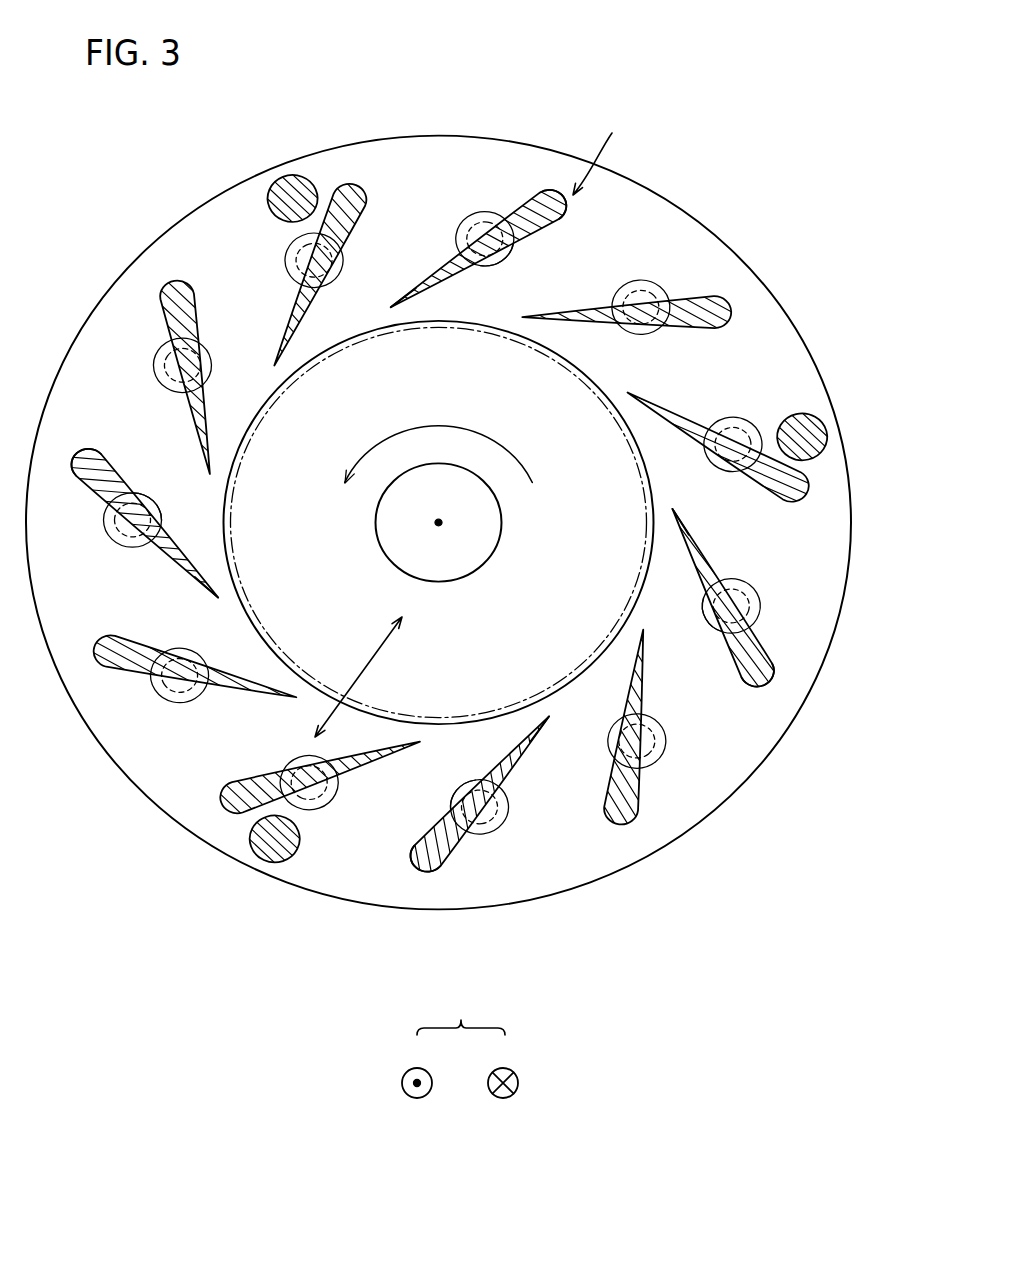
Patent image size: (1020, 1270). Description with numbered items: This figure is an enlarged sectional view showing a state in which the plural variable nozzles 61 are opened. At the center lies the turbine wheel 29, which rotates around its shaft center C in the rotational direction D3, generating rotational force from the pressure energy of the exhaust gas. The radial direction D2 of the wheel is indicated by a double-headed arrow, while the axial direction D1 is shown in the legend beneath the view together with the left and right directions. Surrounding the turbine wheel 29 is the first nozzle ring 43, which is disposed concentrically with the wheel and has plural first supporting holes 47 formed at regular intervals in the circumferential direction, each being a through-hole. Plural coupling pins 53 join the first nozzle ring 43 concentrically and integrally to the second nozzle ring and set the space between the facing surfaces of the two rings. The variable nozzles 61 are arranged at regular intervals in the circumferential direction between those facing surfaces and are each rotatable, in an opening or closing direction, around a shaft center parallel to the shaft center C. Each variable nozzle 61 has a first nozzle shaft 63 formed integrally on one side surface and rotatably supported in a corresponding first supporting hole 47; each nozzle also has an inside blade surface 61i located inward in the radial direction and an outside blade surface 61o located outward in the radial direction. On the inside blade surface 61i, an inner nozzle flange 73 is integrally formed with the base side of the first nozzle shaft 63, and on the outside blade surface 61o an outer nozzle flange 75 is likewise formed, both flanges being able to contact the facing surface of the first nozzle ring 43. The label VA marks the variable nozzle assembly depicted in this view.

The turbine wheel 29 is at (362, 334).
The first nozzle ring 43 is at (345, 141).
The first supporting hole 47 is at (509, 241).
The coupling pin 53 is at (284, 176).
The variable nozzle 61 is at (438, 242).
The inside blade surface 61i is at (430, 288).
The outside blade surface 61o is at (528, 214).
The first nozzle shaft 63 is at (497, 255).
The inner nozzle flange 73 is at (481, 322).
The outer nozzle flange 75 is at (476, 213).
The shaft center C is at (444, 522).
The vane assembly VA is at (600, 150).
The axial direction D1 is at (460, 1045).
The radial direction D2 is at (358, 677).
The rotational direction D3 is at (488, 436).